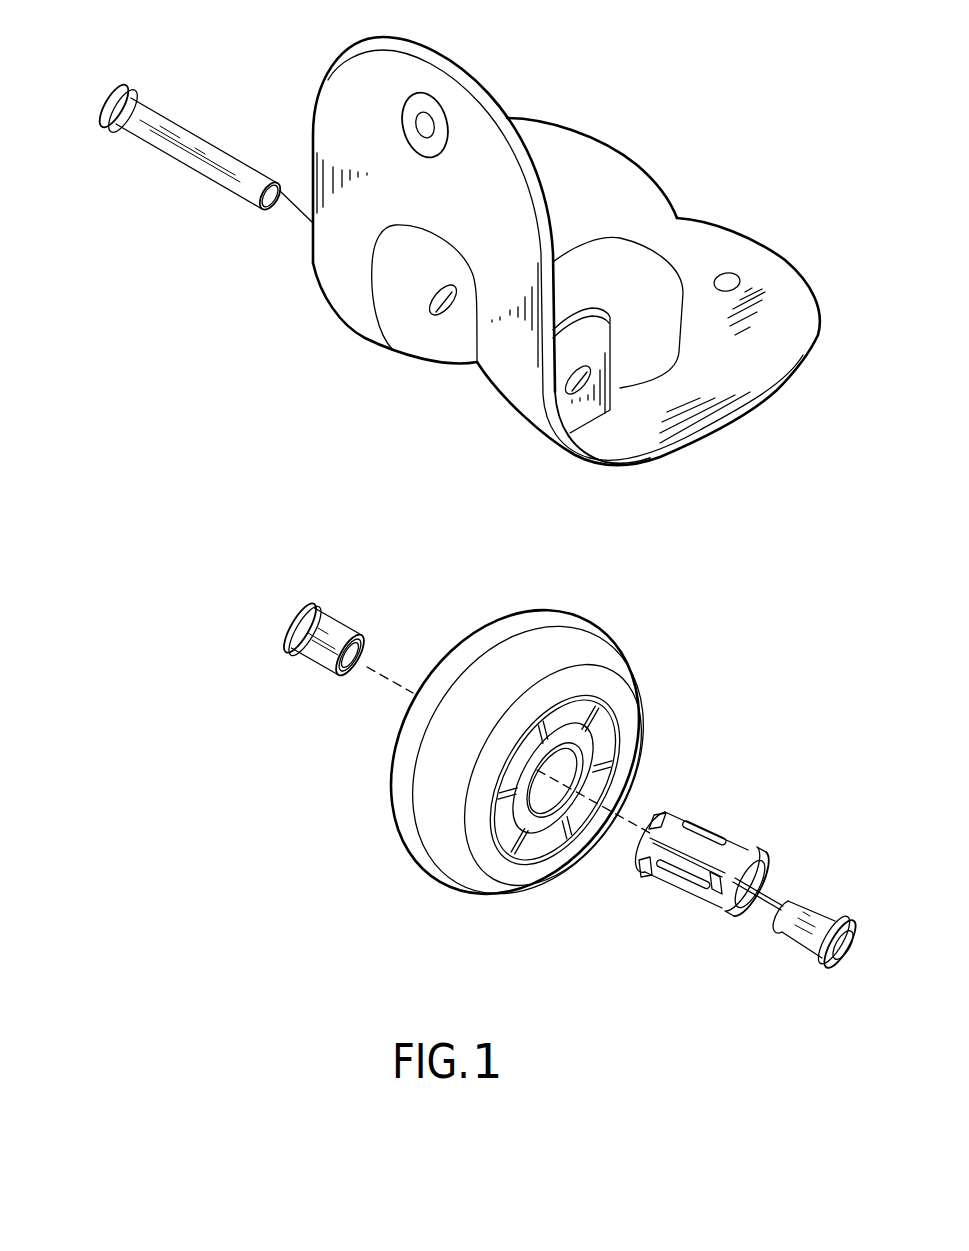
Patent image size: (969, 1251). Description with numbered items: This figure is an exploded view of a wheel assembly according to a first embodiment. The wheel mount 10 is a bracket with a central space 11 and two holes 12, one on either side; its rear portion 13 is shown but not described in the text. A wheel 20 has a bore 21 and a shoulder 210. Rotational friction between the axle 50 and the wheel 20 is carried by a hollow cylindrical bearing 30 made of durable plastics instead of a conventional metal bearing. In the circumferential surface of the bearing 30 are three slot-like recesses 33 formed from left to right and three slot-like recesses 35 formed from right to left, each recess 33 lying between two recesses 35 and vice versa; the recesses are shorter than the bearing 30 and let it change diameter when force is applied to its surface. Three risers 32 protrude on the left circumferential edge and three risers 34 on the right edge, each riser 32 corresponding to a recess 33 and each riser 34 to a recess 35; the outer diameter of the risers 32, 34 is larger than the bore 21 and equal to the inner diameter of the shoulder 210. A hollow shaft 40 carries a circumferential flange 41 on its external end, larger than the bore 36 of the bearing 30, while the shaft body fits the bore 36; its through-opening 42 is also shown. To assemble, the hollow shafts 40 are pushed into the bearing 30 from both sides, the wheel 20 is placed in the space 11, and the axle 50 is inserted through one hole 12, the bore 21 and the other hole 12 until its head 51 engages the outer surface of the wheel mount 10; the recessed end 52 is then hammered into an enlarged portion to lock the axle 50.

The wheel mount 10 is at (592, 117).
The central space 11 is at (463, 370).
The holes 12 is at (443, 305).
The bracket back plate 13 is at (753, 258).
The wheel 20 is at (527, 767).
The bore 21 is at (562, 750).
The shoulder 210 is at (552, 812).
The hollow cylindrical bearing 30 is at (712, 824).
The risers 32 is at (654, 815).
The slot-like recesses 33 is at (645, 845).
The risers 34 is at (760, 853).
The slot-like recesses 35 is at (697, 826).
The bore 36 is at (753, 878).
The hollow shaft 40 is at (583, 791).
The circumferential flange 41 is at (313, 608).
The bushing hole 42 is at (357, 650).
The axle 50 is at (158, 165).
The head 51 is at (103, 105).
The recessed end 52 is at (269, 206).